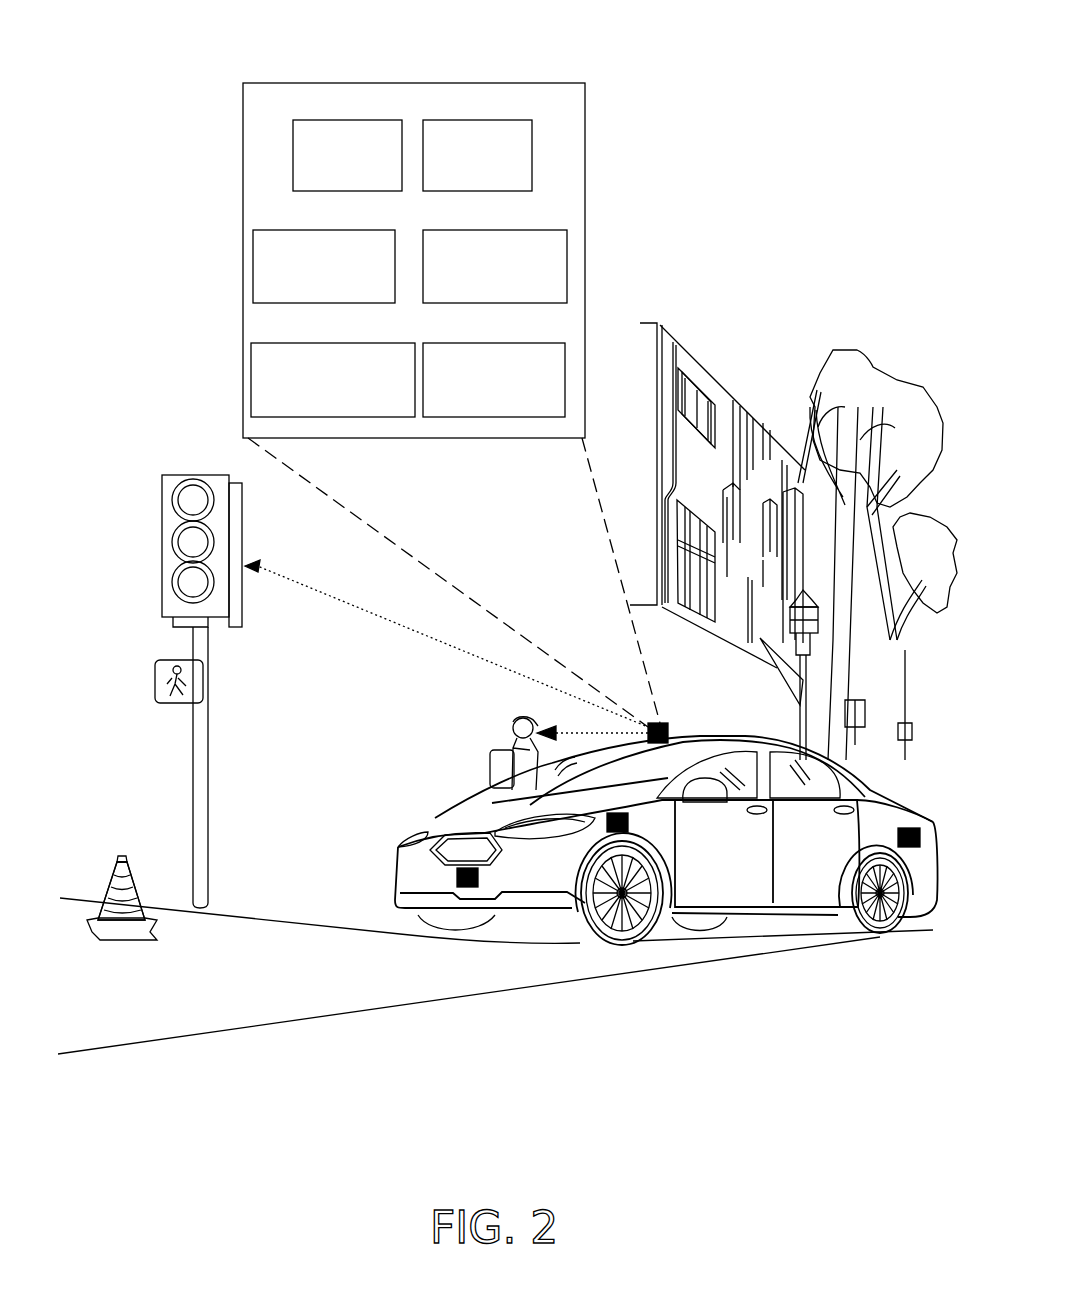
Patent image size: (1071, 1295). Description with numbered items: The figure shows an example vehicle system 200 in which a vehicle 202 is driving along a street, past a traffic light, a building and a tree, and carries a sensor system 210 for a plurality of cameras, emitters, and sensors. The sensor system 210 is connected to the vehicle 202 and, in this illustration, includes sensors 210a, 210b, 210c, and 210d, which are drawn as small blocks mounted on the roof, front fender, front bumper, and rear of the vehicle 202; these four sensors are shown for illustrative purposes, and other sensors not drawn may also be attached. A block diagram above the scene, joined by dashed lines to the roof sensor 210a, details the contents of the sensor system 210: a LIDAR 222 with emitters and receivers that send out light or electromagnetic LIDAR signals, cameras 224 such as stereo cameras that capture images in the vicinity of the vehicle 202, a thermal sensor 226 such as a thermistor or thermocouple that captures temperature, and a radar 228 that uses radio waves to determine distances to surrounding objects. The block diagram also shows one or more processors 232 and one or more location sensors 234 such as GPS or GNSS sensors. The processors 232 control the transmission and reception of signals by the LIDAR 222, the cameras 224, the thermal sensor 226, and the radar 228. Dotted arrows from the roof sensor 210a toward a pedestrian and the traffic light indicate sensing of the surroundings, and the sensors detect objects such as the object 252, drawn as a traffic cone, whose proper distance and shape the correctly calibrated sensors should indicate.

The vehicle system 200 is at (852, 28).
The vehicle 202 is at (428, 825).
The sensor system 210 is at (414, 83).
The sensor 210a is at (668, 725).
The sensor 210b is at (618, 813).
The sensor 210c is at (478, 882).
The sensor 210d is at (918, 827).
The LIDAR 222 is at (502, 230).
The cameras 224 is at (332, 230).
The thermal sensor 226 is at (332, 120).
The radar 228 is at (462, 120).
The processors 232 is at (337, 343).
The location sensors 234 is at (502, 343).
The object 252 is at (127, 940).